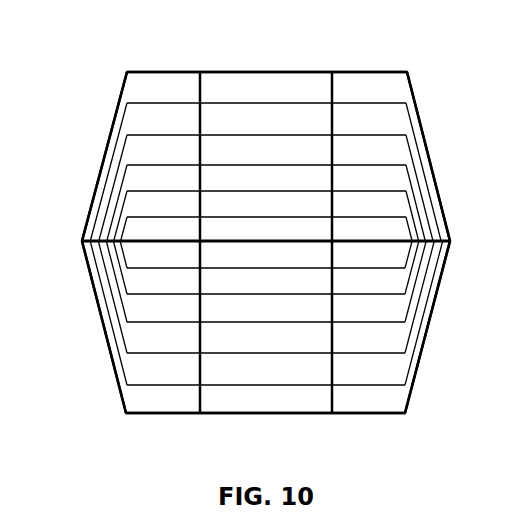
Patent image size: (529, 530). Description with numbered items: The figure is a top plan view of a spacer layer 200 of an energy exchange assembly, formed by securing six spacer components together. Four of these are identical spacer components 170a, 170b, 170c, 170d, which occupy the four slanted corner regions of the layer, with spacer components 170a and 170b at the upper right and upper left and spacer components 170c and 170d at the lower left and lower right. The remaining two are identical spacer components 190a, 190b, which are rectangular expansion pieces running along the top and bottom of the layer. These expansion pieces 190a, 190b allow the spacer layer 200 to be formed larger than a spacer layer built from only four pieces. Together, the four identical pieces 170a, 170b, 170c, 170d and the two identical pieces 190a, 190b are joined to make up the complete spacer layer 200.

The spacer layer 200 is at (260, 242).
The spacer component 190a is at (287, 72).
The spacer component 190b is at (255, 413).
The spacer component 170a is at (429, 163).
The spacer component 170b is at (104, 155).
The spacer component 170c is at (100, 326).
The spacer component 170d is at (410, 385).